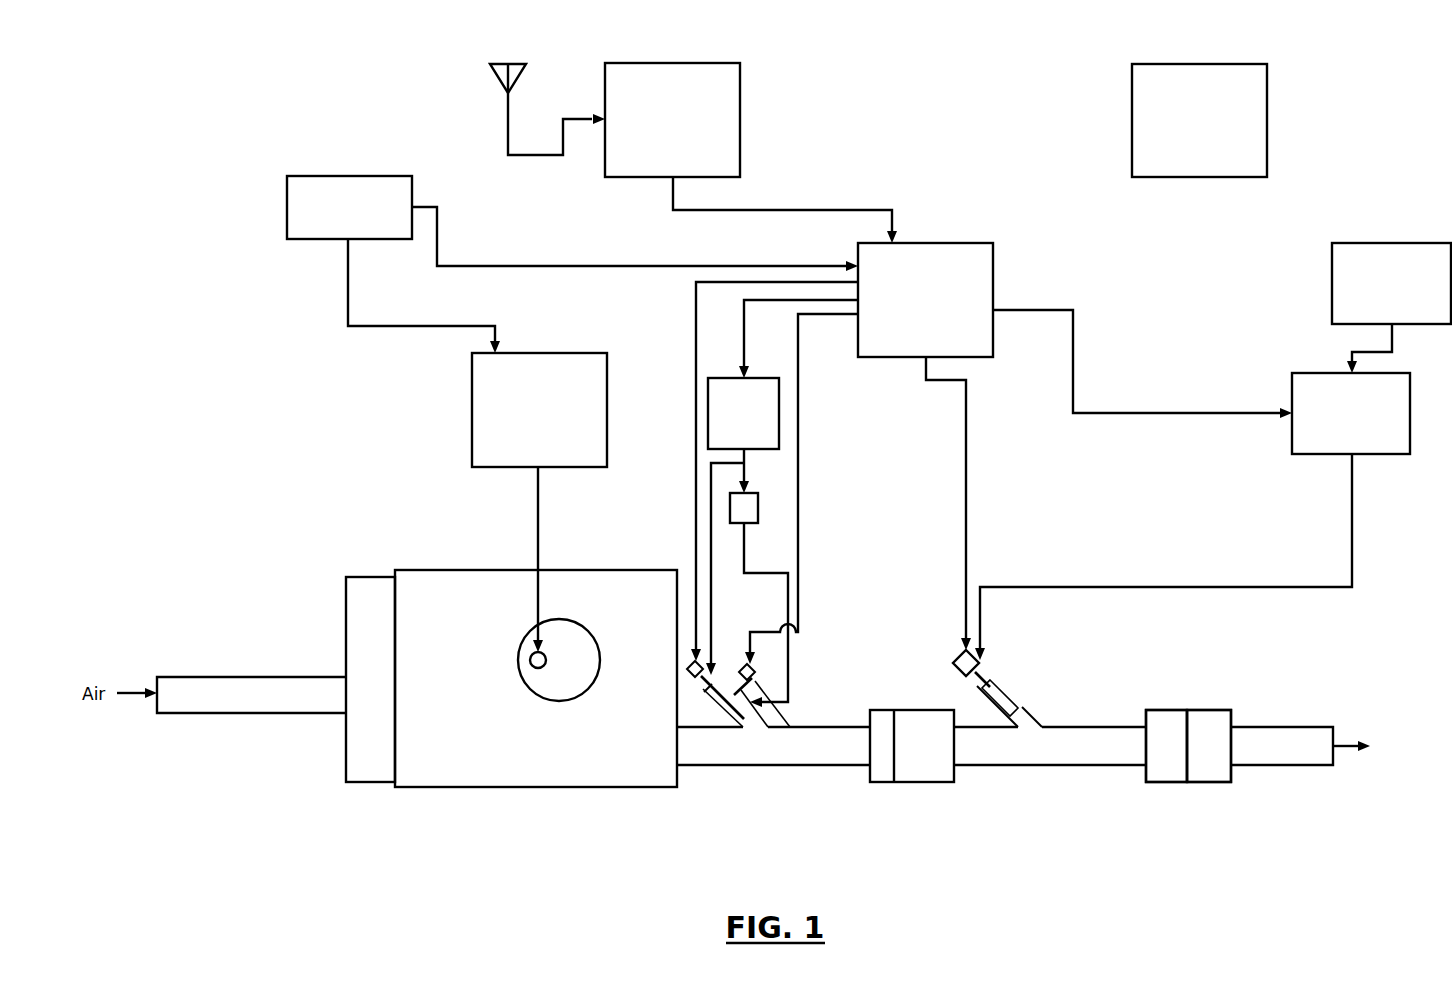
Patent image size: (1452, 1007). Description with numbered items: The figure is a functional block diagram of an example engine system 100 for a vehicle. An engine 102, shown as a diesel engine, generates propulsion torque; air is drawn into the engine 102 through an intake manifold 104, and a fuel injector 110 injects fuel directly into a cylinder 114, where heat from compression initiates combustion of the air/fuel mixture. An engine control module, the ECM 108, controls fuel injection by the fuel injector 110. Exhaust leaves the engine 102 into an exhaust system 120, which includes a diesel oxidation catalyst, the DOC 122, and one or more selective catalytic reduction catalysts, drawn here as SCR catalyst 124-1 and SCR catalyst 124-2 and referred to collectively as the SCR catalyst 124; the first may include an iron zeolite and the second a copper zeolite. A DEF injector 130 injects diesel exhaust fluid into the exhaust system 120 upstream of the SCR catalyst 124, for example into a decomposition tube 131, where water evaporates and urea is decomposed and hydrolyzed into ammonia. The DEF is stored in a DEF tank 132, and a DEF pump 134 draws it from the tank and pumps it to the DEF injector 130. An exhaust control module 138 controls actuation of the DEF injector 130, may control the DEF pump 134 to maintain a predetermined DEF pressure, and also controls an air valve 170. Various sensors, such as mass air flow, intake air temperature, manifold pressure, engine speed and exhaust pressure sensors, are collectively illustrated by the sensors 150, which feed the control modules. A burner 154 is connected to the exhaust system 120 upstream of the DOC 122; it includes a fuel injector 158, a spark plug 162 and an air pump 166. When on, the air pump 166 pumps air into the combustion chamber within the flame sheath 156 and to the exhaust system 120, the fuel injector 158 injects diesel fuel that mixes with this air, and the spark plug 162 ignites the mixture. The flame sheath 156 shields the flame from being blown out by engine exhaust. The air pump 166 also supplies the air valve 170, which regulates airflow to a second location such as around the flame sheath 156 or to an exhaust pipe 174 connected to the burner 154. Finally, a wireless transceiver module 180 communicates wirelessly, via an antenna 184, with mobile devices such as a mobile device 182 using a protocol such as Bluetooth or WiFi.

The engine system 100 is at (264, 85).
The engine 102 is at (465, 570).
The intake manifold 104 is at (372, 577).
The ECM 108 is at (538, 353).
The fuel injector 110 is at (530, 656).
The cylinder 114 is at (558, 701).
The exhaust system 120 is at (1165, 887).
The diesel oxidation catalyst 122 is at (927, 710).
The SCR catalyst 124 is at (1166, 673).
The SCR catalyst 124-1 is at (1165, 782).
The SCR catalyst 124-2 is at (1210, 782).
The DEF injector 130 is at (958, 655).
The decomposition tube 131 is at (1025, 697).
The DEF tank 132 is at (1385, 243).
The DEF pump 134 is at (1292, 392).
The exhaust control module 138 is at (945, 243).
The sensors 150 is at (350, 176).
The burner 154 is at (770, 760).
The flame sheath 156 is at (712, 682).
The fuel injector 158 is at (693, 678).
The spark plug 162 is at (754, 681).
The air pump 166 is at (780, 414).
The air valve 170 is at (758, 507).
The exhaust pipe 174 is at (757, 765).
The wireless transceiver module 180 is at (741, 104).
The mobile device 182 is at (1268, 121).
The antenna 184 is at (512, 107).